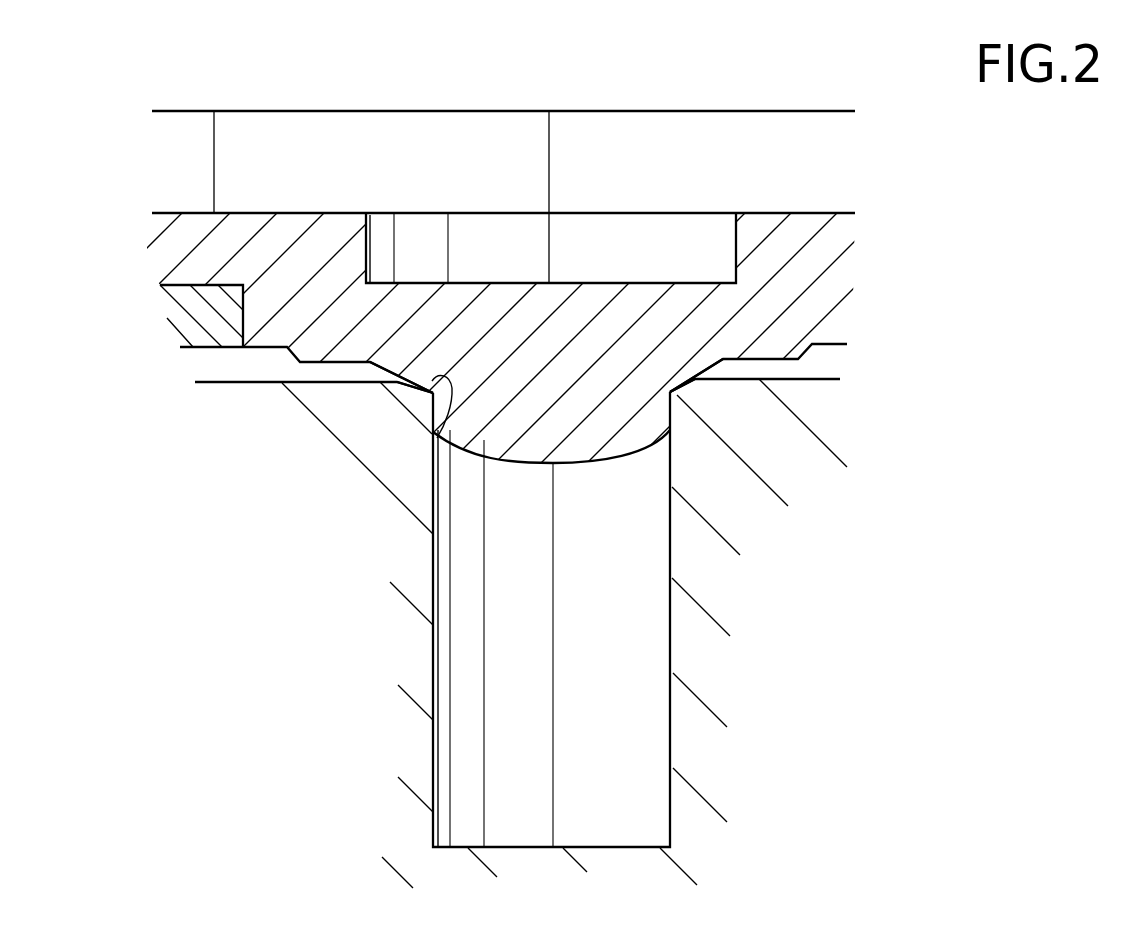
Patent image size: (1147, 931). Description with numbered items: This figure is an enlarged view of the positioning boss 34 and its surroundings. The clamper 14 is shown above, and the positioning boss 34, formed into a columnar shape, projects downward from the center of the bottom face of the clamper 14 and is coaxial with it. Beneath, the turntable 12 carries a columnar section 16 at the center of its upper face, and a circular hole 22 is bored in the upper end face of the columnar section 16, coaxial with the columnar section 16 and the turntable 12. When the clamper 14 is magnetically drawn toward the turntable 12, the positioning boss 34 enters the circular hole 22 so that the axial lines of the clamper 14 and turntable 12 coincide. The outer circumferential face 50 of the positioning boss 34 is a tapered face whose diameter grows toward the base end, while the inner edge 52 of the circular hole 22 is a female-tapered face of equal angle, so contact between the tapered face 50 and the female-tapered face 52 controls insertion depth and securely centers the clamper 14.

The turntable 12 is at (796, 609).
The clamper 14 is at (771, 108).
The columnar section 16 is at (818, 376).
The circular hole 22 is at (673, 738).
The positioning boss 34 is at (510, 465).
The tapered face 50 is at (716, 365).
The female-tapered face 52 is at (432, 381).